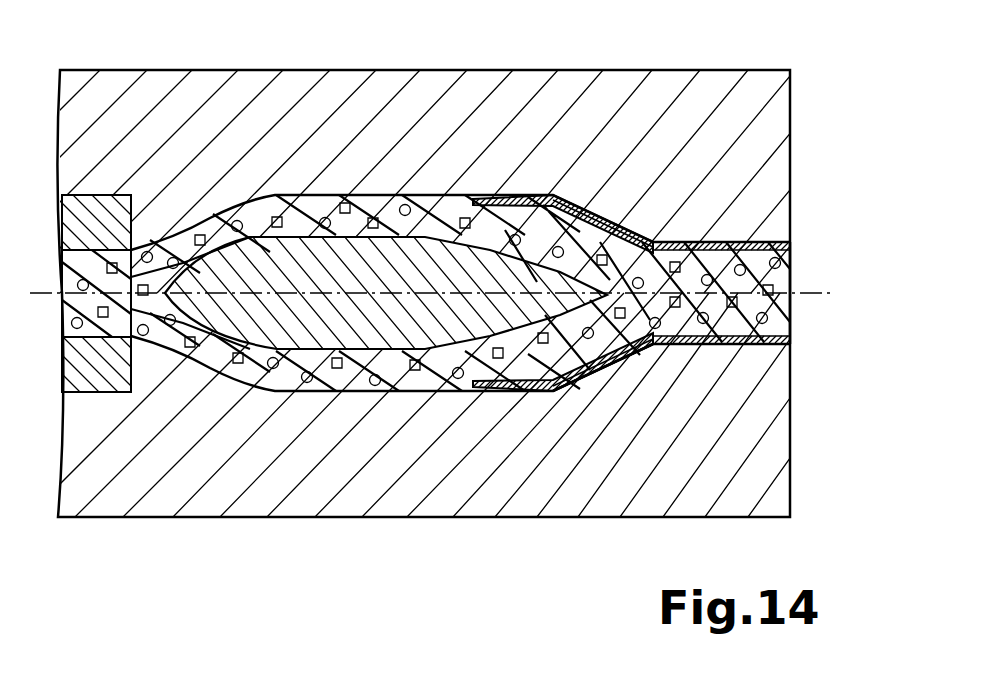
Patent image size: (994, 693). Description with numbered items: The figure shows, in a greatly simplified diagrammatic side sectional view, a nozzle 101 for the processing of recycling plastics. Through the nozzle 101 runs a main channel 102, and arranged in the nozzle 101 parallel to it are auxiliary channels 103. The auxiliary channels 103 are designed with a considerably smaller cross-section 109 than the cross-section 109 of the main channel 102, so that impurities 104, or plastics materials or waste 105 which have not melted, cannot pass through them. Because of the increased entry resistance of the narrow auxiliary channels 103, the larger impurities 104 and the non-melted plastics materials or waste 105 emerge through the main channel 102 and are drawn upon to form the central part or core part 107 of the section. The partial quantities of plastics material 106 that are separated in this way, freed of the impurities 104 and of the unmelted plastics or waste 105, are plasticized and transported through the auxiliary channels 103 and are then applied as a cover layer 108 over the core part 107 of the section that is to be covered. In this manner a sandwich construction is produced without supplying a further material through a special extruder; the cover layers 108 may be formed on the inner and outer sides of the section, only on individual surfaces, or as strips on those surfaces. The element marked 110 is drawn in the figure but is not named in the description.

The nozzle 101 is at (220, 438).
The main channel 102 is at (740, 185).
The auxiliary channel 103 is at (513, 195).
The impurities 104 is at (197, 230).
The non-melted plastics materials or waste 105 is at (322, 222).
The partial quantities of plastics material 106 is at (578, 210).
The core part 107 is at (798, 300).
The cover layer 108 is at (767, 247).
The cross-section 109 is at (534, 274).
The converging wall 110 is at (602, 406).